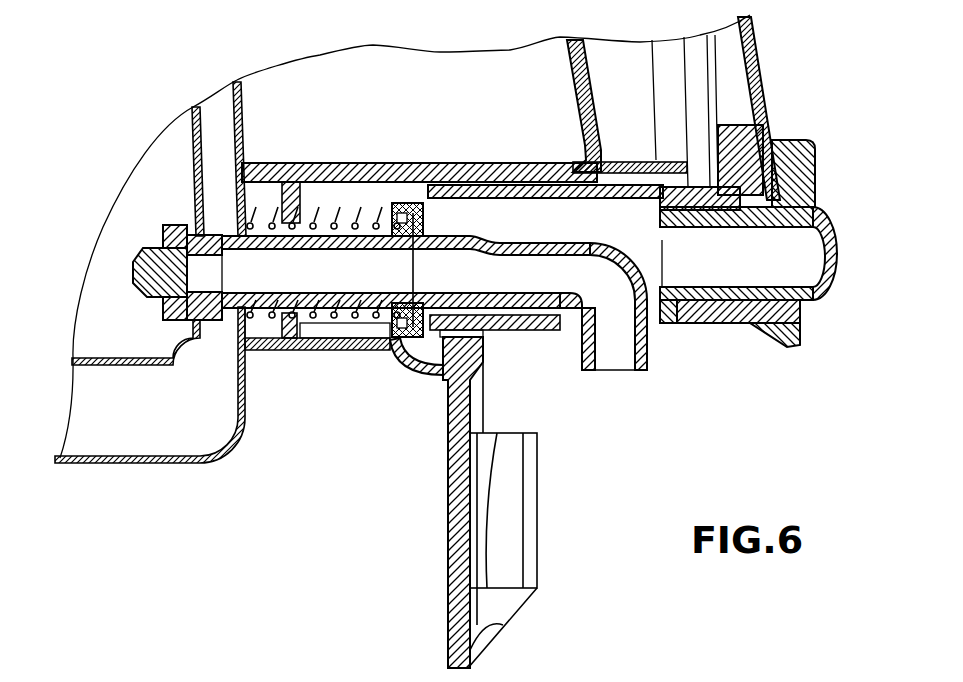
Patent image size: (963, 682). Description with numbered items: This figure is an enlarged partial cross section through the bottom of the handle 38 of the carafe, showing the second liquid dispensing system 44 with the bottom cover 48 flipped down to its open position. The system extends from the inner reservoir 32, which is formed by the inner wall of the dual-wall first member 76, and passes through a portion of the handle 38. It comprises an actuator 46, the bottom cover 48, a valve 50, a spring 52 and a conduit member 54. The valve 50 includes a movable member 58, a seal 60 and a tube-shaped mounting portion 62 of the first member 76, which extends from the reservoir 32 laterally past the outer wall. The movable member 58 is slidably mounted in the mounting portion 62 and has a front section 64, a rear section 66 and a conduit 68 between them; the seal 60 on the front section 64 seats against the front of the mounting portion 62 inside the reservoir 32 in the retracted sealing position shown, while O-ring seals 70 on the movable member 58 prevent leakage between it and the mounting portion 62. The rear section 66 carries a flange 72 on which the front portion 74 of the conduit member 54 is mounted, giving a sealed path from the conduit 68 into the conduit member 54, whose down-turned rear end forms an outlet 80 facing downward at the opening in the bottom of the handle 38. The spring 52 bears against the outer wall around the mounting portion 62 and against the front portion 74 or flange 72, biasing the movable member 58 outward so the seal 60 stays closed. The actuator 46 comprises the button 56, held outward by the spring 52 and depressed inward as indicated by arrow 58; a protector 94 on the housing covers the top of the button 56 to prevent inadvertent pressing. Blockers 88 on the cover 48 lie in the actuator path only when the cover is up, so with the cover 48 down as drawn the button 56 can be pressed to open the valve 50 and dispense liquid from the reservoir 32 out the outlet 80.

The inner reservoir 32 is at (177, 189).
The handle 38 is at (762, 68).
The second liquid dispensing system 44 is at (692, 446).
The actuator 46 is at (836, 228).
The bottom cover 48 is at (448, 535).
The valve 50 is at (138, 255).
The spring 52 is at (355, 222).
The conduit member 54 is at (648, 361).
The button 56 is at (833, 292).
The movable member 58 is at (263, 226).
The seal 60 is at (163, 313).
The mounting portion 62 is at (215, 228).
The front section 64 is at (132, 272).
The rear section 66 is at (414, 212).
The conduit 68 is at (320, 280).
The seals 70 is at (266, 298).
The flange 72 is at (399, 344).
The front portion 74 is at (398, 203).
The first member 76 is at (100, 464).
The outlet 80 is at (613, 371).
The blockers 88 is at (484, 358).
The protector 94 is at (800, 140).